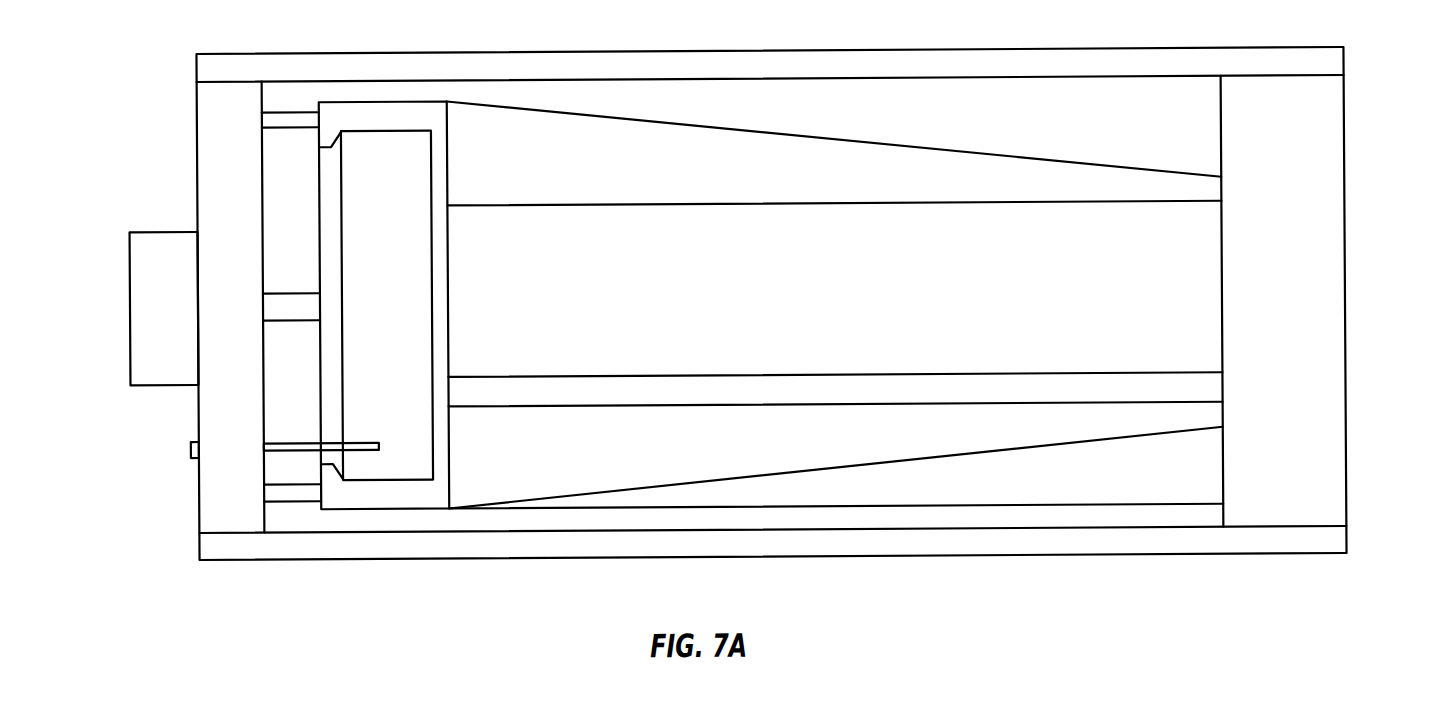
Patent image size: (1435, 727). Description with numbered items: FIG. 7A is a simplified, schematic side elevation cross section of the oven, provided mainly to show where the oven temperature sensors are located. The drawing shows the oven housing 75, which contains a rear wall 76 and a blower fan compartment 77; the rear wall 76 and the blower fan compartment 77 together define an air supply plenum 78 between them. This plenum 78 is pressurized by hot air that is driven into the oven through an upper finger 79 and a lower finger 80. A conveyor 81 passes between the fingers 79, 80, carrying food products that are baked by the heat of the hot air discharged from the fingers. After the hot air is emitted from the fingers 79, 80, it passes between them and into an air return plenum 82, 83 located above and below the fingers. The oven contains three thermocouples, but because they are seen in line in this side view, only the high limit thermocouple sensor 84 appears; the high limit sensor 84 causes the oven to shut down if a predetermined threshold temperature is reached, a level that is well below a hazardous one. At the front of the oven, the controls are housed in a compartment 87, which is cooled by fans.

The oven housing 75 is at (888, 547).
The rear wall 76 is at (198, 135).
The blower fan compartment 77 is at (432, 277).
The air supply plenum 78 is at (407, 497).
The upper finger 79 is at (848, 189).
The lower finger 80 is at (848, 464).
The conveyor 81 is at (1057, 391).
The air return plenum 82 is at (293, 142).
The air return plenum 83 is at (1194, 496).
The high limit thermocouple sensor 84 is at (300, 451).
The controls compartment 87 is at (1345, 429).